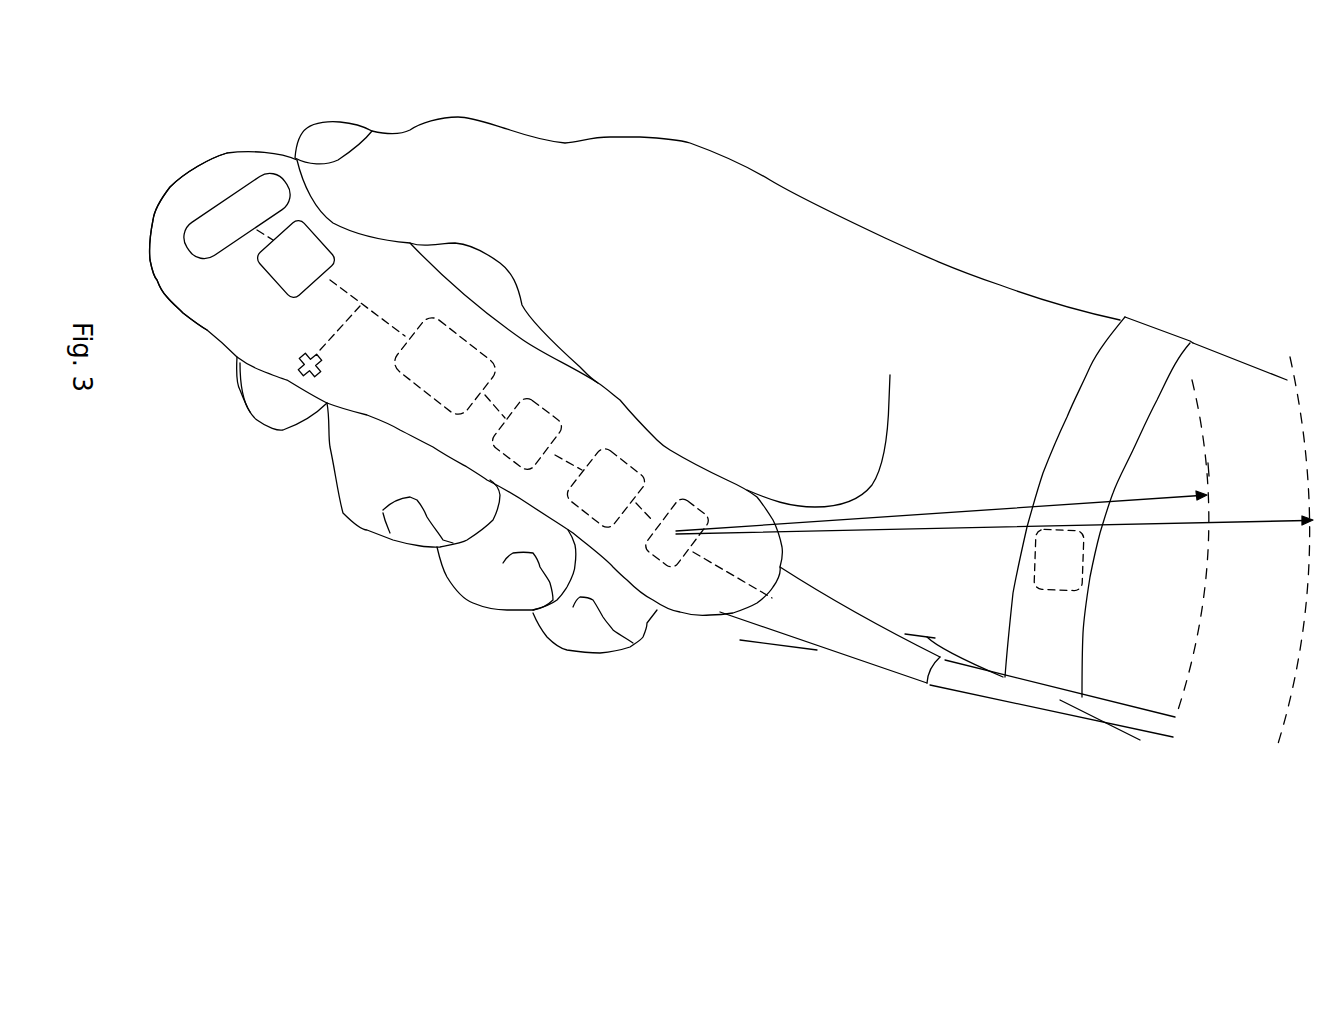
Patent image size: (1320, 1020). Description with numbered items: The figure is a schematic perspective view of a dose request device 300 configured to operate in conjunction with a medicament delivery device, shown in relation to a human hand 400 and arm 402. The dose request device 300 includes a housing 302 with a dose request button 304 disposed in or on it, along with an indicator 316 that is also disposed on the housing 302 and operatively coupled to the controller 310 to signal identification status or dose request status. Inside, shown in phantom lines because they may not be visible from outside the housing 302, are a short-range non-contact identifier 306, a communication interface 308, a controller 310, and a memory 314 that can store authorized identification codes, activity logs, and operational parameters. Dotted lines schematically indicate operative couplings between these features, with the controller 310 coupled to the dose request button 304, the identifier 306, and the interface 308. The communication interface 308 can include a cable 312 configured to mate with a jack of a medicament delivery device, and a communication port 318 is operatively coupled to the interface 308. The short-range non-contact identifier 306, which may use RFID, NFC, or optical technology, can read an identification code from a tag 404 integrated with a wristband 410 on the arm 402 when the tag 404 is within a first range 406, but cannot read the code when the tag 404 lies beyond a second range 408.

The dose request device 300 is at (228, 327).
The housing 302 is at (180, 305).
The dose request button 304 is at (298, 245).
The short-range non-contact identifier 306 is at (677, 553).
The communication interface 308 is at (590, 500).
The controller 310 is at (424, 382).
The cable 312 is at (977, 680).
The memory 314 is at (517, 457).
The indicator 316 is at (215, 227).
The communication port 318 is at (308, 372).
The human hand 400 is at (645, 187).
The arm 402 is at (1235, 390).
The tag 404 is at (1060, 560).
The first range 406 is at (1210, 472).
The second range 408 is at (1313, 550).
The wristband 410 is at (1138, 373).